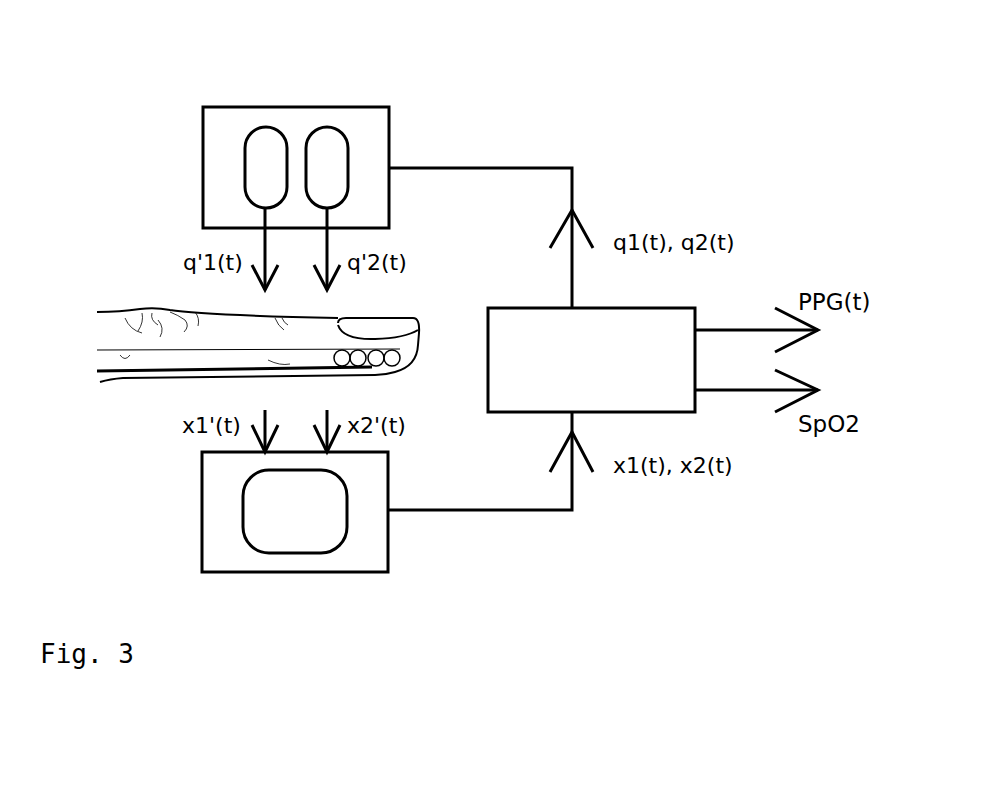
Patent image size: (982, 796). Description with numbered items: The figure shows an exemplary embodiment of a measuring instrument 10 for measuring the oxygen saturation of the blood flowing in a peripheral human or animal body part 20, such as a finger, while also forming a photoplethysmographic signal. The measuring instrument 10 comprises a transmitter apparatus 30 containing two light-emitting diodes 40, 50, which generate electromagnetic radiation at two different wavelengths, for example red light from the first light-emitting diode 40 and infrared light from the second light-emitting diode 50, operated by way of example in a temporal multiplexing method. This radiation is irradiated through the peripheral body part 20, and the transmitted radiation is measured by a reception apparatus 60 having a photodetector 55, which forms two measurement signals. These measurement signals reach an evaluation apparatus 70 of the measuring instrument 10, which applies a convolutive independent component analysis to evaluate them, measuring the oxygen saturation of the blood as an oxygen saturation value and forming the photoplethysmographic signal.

The measuring instrument 10 is at (675, 168).
The peripheral human or animal body part 20 is at (122, 330).
The transmitter apparatus 30 is at (389, 125).
The light-emitting diode 40 is at (265, 148).
The light-emitting diode 50 is at (327, 148).
The photodetector 55 is at (285, 532).
The reception apparatus 60 is at (202, 492).
The evaluation apparatus 70 is at (530, 308).